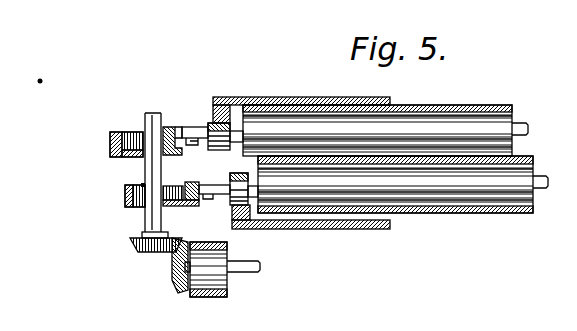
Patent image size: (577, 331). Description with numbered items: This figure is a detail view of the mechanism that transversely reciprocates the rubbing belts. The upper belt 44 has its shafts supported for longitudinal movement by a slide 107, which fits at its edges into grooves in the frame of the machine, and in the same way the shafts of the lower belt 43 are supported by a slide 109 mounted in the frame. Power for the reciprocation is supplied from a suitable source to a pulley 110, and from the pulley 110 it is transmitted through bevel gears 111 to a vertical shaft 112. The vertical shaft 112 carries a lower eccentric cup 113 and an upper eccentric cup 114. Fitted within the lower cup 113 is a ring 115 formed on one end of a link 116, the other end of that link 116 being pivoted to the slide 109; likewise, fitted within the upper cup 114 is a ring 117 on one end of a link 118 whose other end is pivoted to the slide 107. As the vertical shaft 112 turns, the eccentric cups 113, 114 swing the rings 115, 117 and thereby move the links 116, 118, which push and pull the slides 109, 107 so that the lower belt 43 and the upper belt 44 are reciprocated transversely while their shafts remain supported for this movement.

The lower belt 43 is at (448, 213).
The upper belt 44 is at (476, 96).
The slide 107 is at (262, 88).
The slide 109 is at (290, 224).
The pulley 110 is at (228, 282).
The bevel gears 111 is at (166, 254).
The vertical shaft 112 is at (147, 216).
The lower eccentric cup 113 is at (126, 195).
The upper eccentric cup 114 is at (111, 147).
The ring 115 is at (143, 186).
The link 116 is at (204, 192).
The ring 117 is at (118, 132).
The link 118 is at (186, 130).